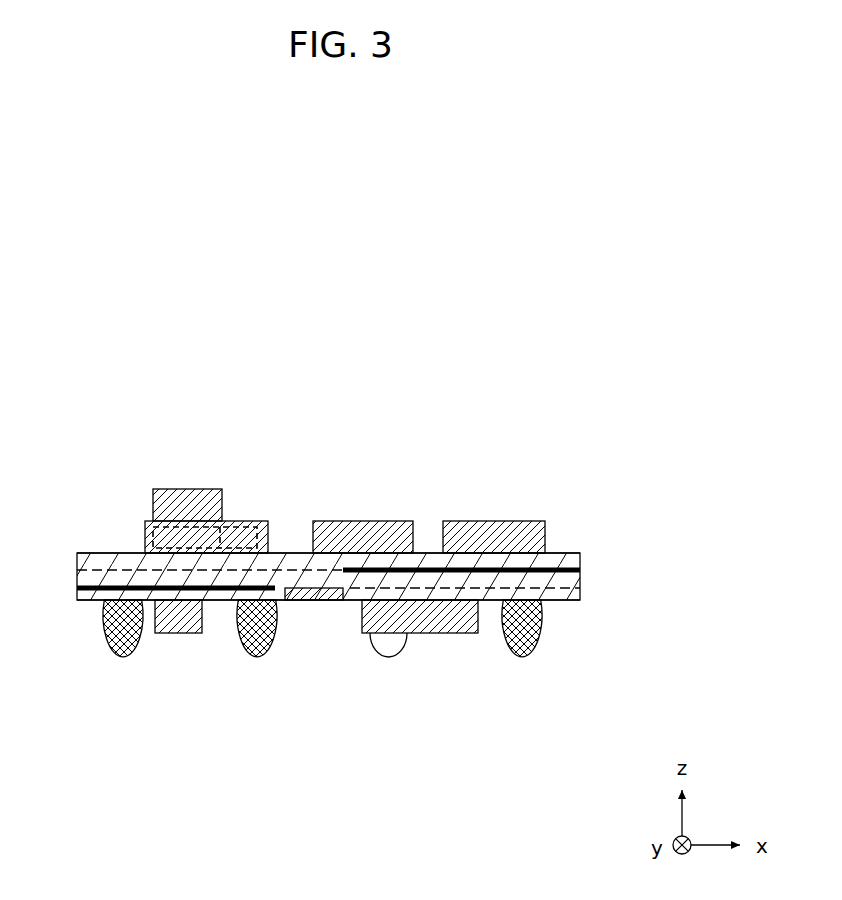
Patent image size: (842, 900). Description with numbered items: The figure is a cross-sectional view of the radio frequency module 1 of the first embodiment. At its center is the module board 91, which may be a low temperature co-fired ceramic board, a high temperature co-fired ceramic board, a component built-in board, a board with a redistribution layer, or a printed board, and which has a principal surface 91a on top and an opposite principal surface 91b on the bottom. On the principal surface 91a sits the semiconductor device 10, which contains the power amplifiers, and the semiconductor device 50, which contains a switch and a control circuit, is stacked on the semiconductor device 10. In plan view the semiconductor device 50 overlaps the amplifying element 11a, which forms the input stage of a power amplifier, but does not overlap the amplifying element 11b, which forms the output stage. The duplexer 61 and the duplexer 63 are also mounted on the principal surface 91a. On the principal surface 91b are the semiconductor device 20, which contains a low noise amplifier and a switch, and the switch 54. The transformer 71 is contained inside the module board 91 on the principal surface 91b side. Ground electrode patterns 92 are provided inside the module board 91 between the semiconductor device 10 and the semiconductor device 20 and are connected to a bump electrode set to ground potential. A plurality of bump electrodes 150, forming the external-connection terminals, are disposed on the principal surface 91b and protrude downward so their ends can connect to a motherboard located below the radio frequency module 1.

The radio frequency module 1 is at (538, 364).
The semiconductor device 10 is at (173, 515).
The amplifying element 11a is at (143, 526).
The amplifying element 11b is at (244, 521).
The semiconductor device 20 is at (440, 633).
The semiconductor device 50 is at (200, 489).
The switch 54 is at (177, 633).
The duplexer 61 is at (365, 521).
The duplexer 63 is at (492, 521).
The transformer 71 is at (308, 600).
The module board 91 is at (580, 565).
The principal surface 91a is at (580, 553).
The principal surface 91b is at (562, 600).
The ground electrode pattern 92 is at (90, 600).
The bump electrode 150 is at (123, 658).